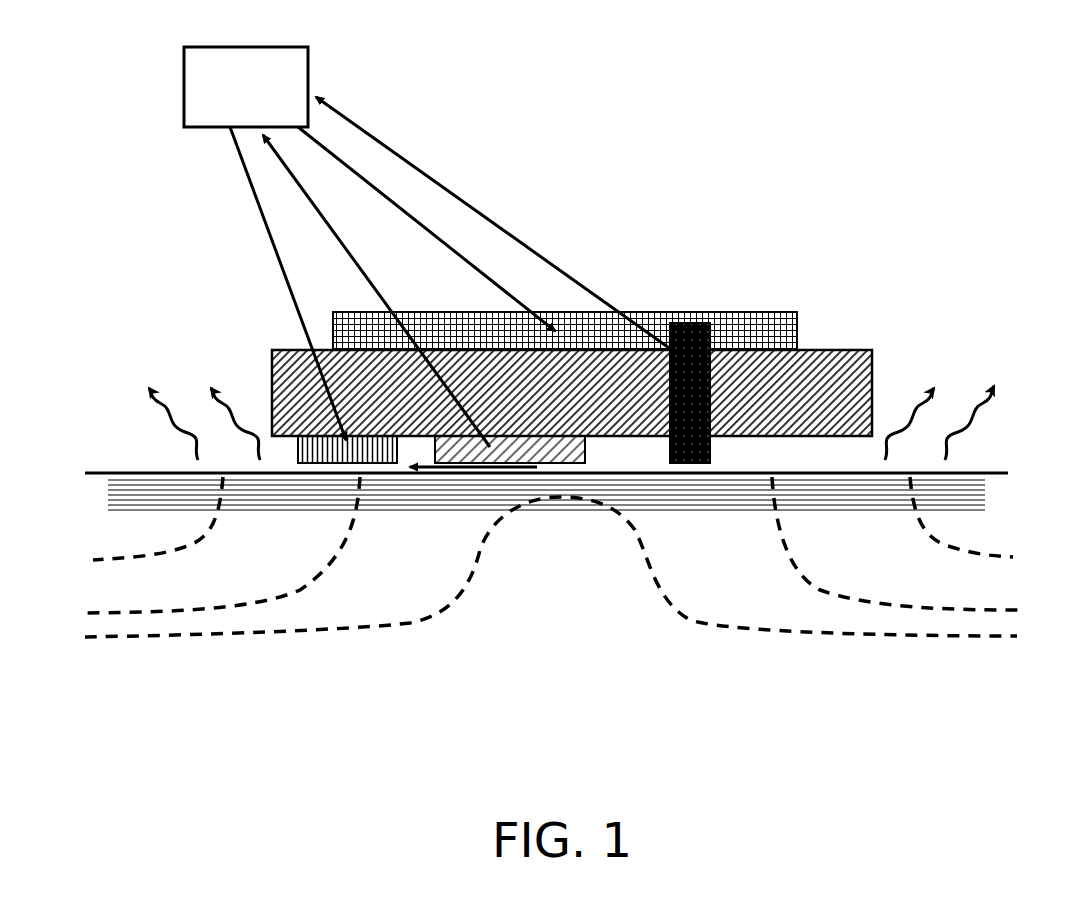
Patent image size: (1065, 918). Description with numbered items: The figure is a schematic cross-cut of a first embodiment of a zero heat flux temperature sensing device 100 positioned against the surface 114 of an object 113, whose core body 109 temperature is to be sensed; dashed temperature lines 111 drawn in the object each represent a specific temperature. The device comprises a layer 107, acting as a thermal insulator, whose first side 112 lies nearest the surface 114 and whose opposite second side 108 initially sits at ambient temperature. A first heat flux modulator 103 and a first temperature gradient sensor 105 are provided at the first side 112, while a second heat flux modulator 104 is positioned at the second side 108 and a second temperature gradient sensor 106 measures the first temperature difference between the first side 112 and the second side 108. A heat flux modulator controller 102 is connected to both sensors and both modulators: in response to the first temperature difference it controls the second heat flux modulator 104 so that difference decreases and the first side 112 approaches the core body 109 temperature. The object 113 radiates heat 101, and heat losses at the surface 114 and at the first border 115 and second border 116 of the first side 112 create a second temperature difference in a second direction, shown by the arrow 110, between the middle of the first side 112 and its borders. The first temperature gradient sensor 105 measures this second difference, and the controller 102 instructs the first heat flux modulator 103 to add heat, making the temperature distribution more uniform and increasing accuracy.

The zero heat flux temperature sensing device 100 is at (736, 104).
The radiated heat 101 is at (178, 388).
The heat flux modulator controller 102 is at (266, 98).
The first heat flux modulator 103 is at (320, 474).
The second heat flux modulator 104 is at (332, 322).
The first temperature gradient sensor 105 is at (552, 456).
The second temperature gradient sensor 106 is at (692, 464).
The layer 107 is at (800, 368).
The second side 108 is at (848, 347).
The core body 109 is at (440, 624).
The second direction 110 is at (438, 472).
The temperature lines 111 is at (645, 568).
The first side 112 is at (837, 438).
The object 113 is at (152, 655).
The surface 114 is at (133, 478).
The first border 115 is at (270, 436).
The second border 116 is at (877, 433).